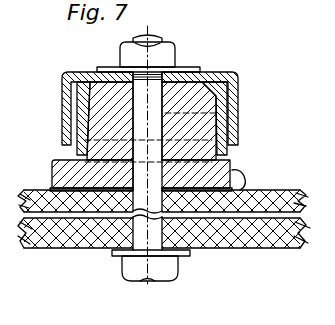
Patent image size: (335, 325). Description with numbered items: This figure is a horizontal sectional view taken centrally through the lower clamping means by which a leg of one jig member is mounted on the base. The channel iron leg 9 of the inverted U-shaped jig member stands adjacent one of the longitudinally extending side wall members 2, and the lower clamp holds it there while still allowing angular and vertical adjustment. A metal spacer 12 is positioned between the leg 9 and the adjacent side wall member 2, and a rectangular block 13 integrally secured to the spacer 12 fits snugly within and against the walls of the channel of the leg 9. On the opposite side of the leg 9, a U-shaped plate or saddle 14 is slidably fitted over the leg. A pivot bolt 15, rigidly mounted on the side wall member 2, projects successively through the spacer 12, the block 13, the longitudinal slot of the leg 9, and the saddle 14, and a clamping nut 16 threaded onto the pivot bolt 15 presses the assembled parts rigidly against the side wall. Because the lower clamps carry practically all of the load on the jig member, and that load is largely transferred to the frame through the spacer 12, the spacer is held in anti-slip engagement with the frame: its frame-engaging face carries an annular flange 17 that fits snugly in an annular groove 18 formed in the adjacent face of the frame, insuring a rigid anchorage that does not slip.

The side wall member 2 is at (302, 197).
The channel iron leg 9 is at (226, 75).
The metal spacer 12 is at (232, 162).
The rectangular block 13 is at (240, 112).
The saddle 14 is at (201, 70).
The pivot bolt 15 is at (131, 264).
The clamping nut 16 is at (171, 51).
The annular flange 17 is at (58, 189).
The annular groove 18 is at (243, 186).